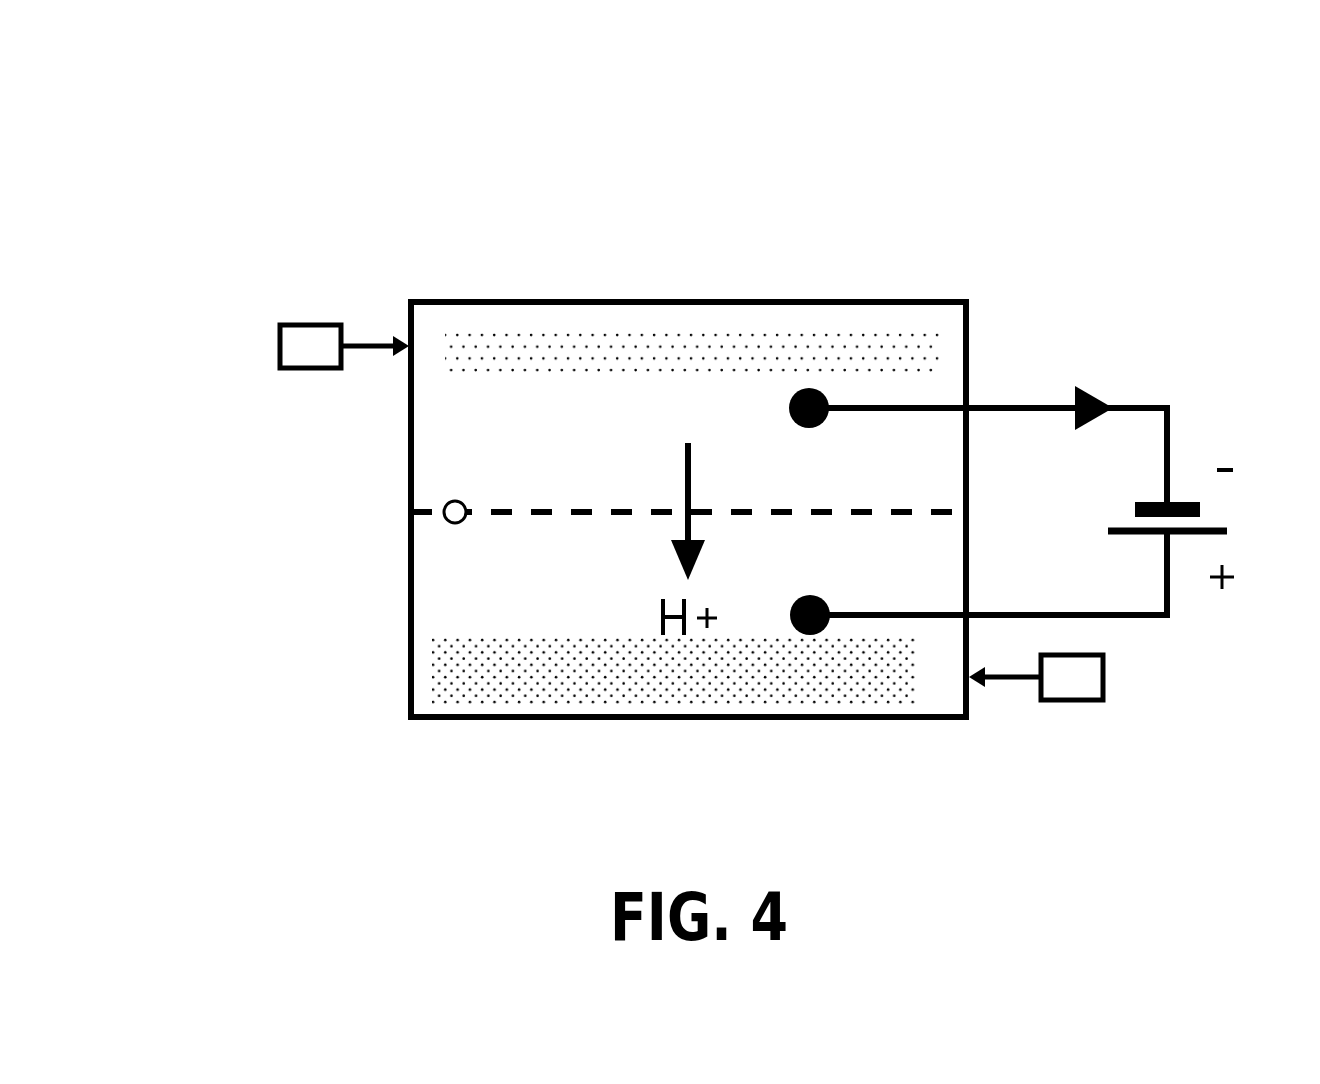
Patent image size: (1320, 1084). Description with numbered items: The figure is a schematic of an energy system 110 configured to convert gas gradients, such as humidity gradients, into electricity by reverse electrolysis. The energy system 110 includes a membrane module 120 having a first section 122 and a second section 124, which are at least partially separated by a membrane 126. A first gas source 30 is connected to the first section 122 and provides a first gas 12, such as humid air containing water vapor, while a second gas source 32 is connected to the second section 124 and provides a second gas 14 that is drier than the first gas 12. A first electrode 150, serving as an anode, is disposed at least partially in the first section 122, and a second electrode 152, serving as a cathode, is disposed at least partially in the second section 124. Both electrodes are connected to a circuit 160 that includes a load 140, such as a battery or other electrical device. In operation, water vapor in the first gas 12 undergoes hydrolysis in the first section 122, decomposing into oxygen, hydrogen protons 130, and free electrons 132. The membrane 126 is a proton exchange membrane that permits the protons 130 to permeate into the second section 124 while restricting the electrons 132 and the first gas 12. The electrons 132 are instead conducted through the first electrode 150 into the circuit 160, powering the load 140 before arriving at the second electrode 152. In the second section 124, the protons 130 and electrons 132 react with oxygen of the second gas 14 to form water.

The energy system 110 is at (1093, 165).
The membrane module 120 is at (540, 282).
The first section 122 is at (786, 300).
The second section 124 is at (943, 722).
The first gas 12 is at (520, 362).
The second gas 14 is at (798, 690).
The membrane 126 is at (455, 524).
The protons 130 is at (648, 616).
The electrons 132 is at (1083, 310).
The load 140 is at (1183, 458).
The first electrode 150 is at (815, 385).
The second electrode 152 is at (813, 640).
The circuit 160 is at (1158, 640).
The first gas source 30 is at (307, 372).
The second gas source 32 is at (1090, 703).